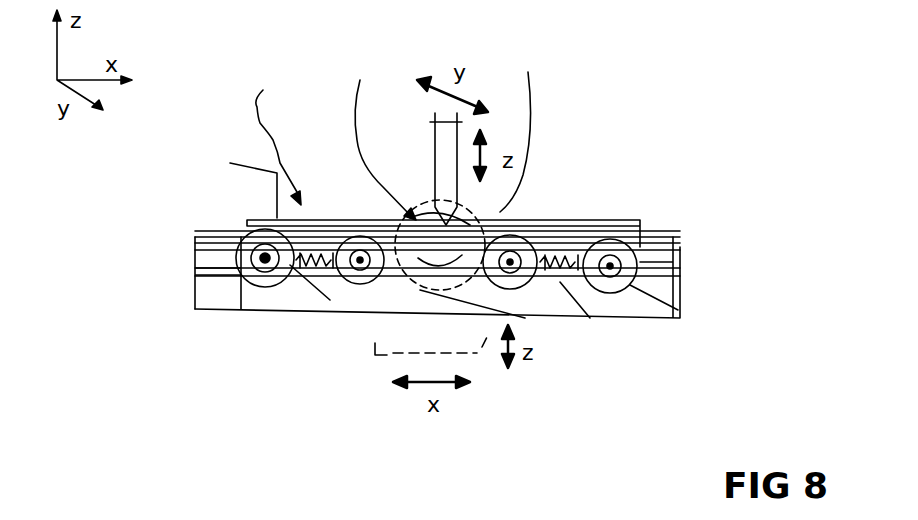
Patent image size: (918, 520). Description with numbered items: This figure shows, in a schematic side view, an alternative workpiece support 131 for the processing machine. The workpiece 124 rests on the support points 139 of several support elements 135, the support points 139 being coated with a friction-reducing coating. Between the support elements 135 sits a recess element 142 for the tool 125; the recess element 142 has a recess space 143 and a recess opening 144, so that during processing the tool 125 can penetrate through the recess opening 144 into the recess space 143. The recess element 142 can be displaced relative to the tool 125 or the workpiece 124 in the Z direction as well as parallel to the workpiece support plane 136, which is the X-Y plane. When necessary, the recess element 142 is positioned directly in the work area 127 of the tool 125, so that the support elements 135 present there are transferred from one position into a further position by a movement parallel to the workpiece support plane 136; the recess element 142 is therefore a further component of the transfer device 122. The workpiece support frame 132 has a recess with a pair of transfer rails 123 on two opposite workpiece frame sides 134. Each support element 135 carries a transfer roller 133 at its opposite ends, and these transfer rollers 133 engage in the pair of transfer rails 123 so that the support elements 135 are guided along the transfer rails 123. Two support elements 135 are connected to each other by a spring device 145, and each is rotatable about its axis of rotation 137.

The transfer device 122 is at (165, 228).
The pair of transfer rails 123 is at (688, 265).
The workpiece 124 is at (230, 163).
The tool 125 is at (434, 130).
The work area 127 is at (378, 132).
The workpiece support 131 is at (178, 58).
The workpiece support frame 132 is at (657, 325).
The transfer roller 133 is at (195, 266).
The workpiece frame sides 134 is at (195, 293).
The support elements 135 is at (233, 288).
The workpiece support plane 136 is at (270, 134).
The axes of rotation 137 is at (327, 217).
The support points 139 is at (263, 213).
The recess element 142 is at (390, 365).
The recess space 143 is at (552, 313).
The recess opening 144 is at (529, 120).
The spring device 145 is at (280, 282).